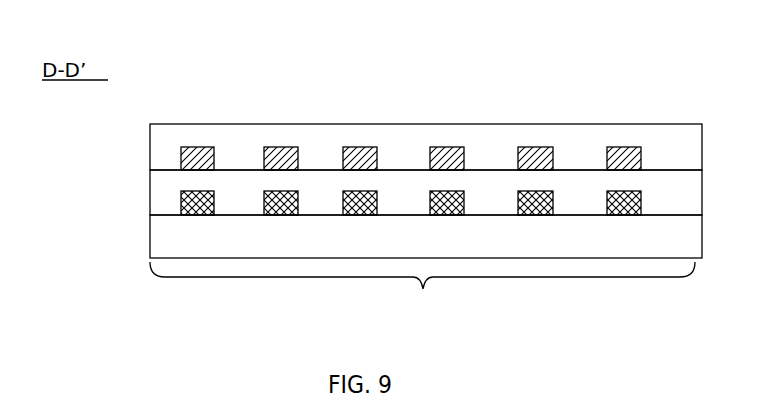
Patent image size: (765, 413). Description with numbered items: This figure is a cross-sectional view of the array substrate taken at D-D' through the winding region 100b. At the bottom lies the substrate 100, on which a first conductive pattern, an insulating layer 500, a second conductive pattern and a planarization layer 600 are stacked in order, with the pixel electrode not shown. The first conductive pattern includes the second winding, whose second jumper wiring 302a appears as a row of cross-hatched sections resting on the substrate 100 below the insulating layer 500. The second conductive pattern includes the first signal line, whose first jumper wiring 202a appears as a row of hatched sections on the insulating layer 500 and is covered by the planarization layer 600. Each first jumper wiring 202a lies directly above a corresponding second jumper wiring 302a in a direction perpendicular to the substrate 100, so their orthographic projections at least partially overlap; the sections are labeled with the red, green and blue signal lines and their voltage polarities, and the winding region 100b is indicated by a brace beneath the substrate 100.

The planarization layer 600 is at (163, 135).
The first jumper wiring 202a is at (198, 160).
The insulating layer 500 is at (163, 178).
The second jumper wiring 302a is at (197, 204).
The substrate 100 is at (190, 246).
The winding region 100b is at (422, 292).